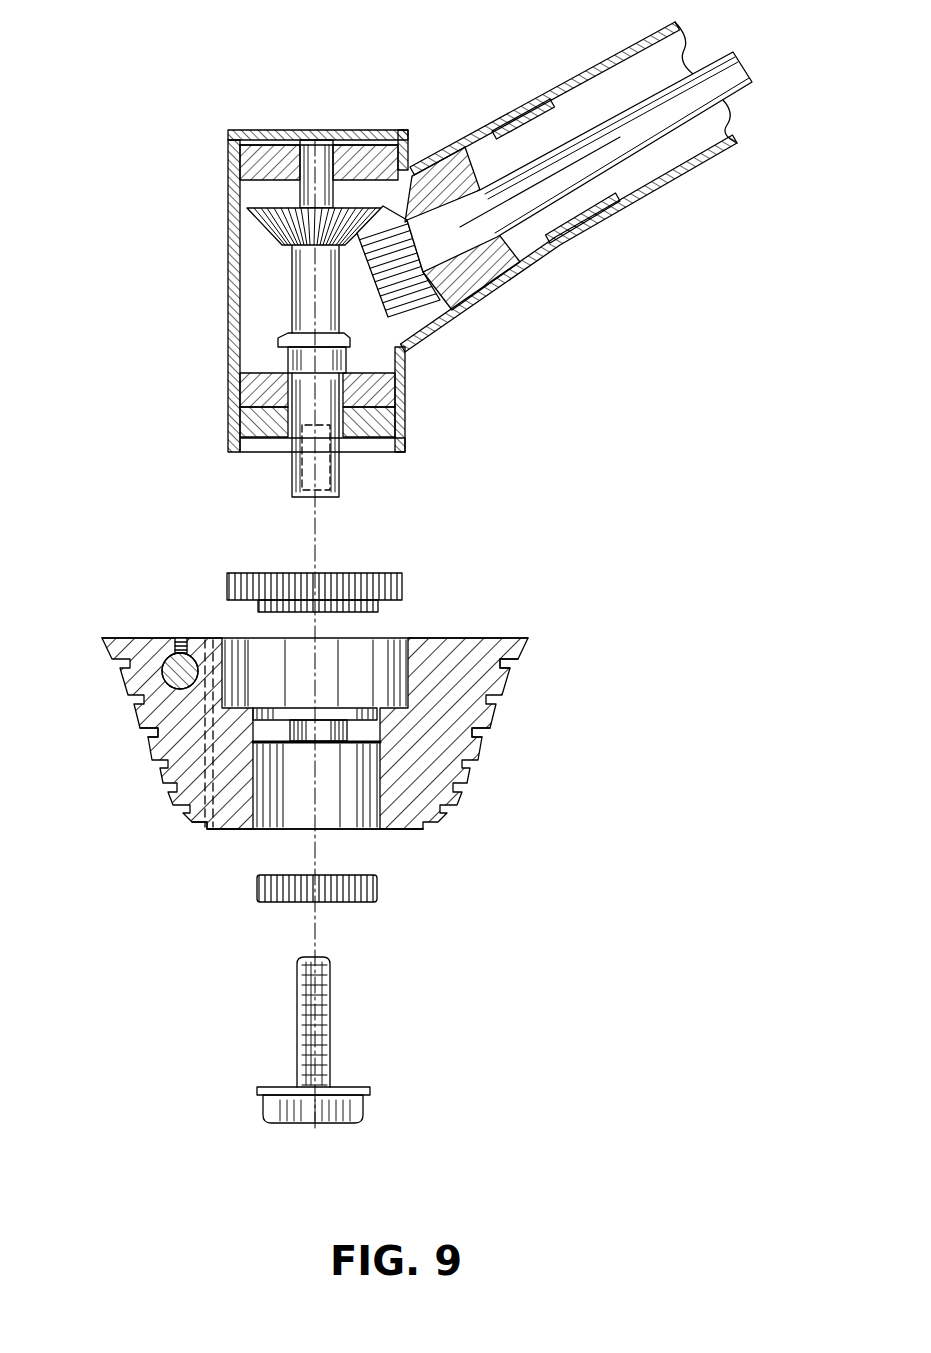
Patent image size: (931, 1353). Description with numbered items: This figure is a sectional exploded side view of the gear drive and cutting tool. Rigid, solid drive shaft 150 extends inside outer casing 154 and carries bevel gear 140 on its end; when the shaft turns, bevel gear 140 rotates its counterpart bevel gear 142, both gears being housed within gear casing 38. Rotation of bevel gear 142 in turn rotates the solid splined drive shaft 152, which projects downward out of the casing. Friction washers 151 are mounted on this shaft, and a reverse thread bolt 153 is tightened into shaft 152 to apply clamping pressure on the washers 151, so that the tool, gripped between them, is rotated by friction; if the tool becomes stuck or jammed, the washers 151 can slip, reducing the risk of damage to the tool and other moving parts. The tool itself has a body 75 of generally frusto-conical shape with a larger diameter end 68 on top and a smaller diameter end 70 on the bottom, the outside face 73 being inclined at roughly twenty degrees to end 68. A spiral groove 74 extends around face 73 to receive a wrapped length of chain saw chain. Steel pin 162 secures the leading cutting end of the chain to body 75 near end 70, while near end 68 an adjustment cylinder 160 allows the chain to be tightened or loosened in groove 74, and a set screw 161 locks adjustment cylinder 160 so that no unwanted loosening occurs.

The gear casing 38 is at (303, 128).
The larger diameter end 68 is at (493, 638).
The smaller diameter end 70 is at (228, 832).
The face 73 is at (138, 727).
The spiral groove 74 is at (495, 726).
The body 75 is at (518, 673).
The bevel gear 140 is at (420, 312).
The bevel gear 142 is at (272, 227).
The solid drive shaft 150 is at (650, 100).
The friction washers 151 is at (403, 584).
The solid splined drive shaft 152 is at (340, 488).
The reverse thread bolt 153 is at (364, 1110).
The outer casing 154 is at (662, 190).
The adjustment cylinder 160 is at (170, 674).
The set screw 161 is at (178, 636).
The steel pin 162 is at (205, 757).